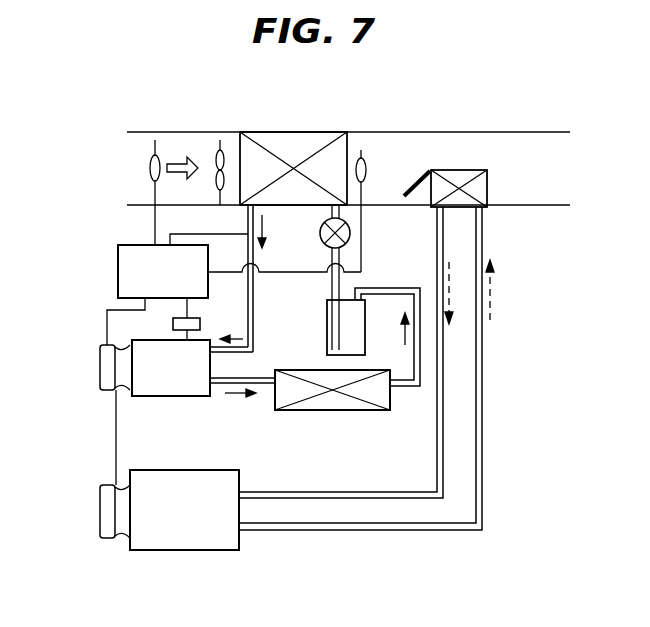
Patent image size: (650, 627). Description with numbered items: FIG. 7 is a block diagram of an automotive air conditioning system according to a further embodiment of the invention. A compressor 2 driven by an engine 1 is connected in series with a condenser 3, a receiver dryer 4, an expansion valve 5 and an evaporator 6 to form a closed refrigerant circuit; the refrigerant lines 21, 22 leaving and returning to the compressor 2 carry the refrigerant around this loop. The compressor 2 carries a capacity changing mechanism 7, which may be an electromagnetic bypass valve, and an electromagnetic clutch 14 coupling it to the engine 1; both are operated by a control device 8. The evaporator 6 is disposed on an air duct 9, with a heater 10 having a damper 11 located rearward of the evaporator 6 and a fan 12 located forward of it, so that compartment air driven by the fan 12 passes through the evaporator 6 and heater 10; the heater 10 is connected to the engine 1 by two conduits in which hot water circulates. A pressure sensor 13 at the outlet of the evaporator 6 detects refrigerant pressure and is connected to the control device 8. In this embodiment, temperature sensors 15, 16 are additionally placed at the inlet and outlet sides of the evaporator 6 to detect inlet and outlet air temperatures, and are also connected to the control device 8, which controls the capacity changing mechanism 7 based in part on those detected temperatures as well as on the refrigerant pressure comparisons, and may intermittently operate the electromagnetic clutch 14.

The engine 1 is at (190, 538).
The compressor 2 is at (170, 393).
The condenser 3 is at (333, 405).
The receiver dryer 4 is at (326, 317).
The expansion valve 5 is at (320, 233).
The evaporator 6 is at (316, 142).
The capacity changing mechanism 7 is at (200, 324).
The control device 8 is at (122, 245).
The air duct 9 is at (483, 132).
The heater 10 is at (478, 170).
The damper 11 is at (420, 178).
The fan 12 is at (220, 140).
The pressure sensor 13 is at (252, 238).
The electromagnetic clutch 14 is at (105, 360).
The temperature sensor 15 is at (155, 140).
The temperature sensor 16 is at (363, 150).
The discharge pipe 21 is at (216, 386).
The suction pipe 22 is at (236, 363).